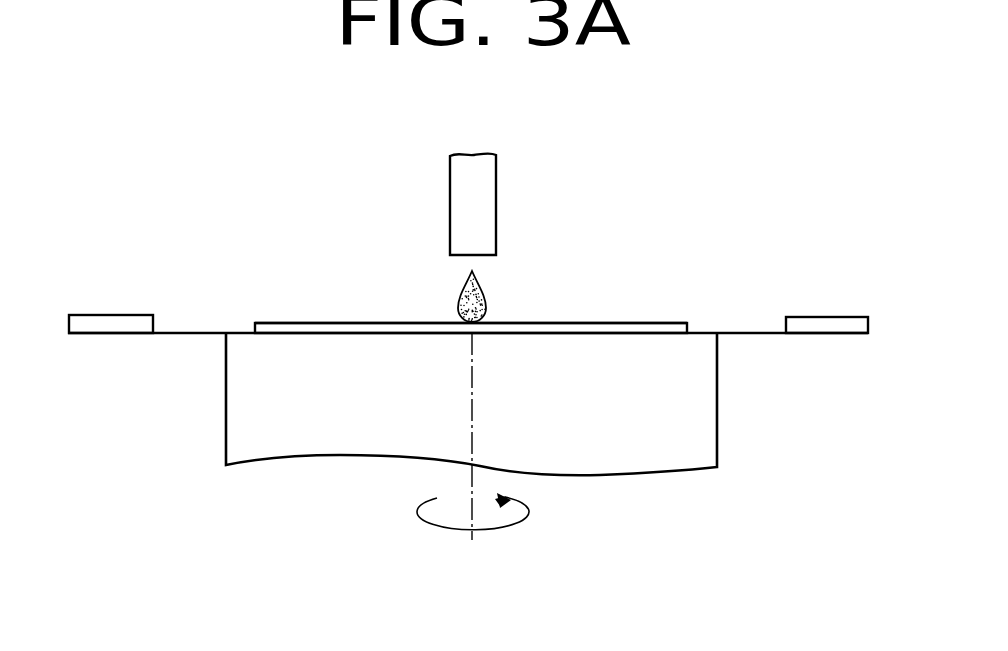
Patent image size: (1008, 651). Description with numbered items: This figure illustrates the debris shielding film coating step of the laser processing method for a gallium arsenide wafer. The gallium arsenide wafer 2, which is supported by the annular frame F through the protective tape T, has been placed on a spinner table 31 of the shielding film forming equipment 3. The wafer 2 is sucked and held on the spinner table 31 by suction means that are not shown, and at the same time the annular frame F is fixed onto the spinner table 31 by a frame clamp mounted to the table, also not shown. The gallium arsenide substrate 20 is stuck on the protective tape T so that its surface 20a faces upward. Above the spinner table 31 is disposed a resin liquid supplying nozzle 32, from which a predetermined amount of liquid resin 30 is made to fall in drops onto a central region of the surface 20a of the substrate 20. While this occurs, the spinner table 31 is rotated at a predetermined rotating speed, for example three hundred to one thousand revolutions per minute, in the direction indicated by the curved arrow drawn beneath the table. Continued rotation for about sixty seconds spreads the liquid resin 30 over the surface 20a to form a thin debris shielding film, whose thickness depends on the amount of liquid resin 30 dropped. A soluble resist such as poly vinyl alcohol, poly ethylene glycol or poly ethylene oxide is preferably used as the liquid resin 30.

The gallium arsenide wafer 2 is at (459, 278).
The shielding film forming equipment 3 is at (589, 224).
The gallium arsenide substrate 20 is at (315, 330).
The surface 20a is at (587, 323).
The liquid resin 30 is at (458, 303).
The spinner table 31 is at (706, 428).
The resin liquid supplying nozzle 32 is at (447, 193).
The protective tape T is at (747, 333).
The annular frame F is at (832, 317).